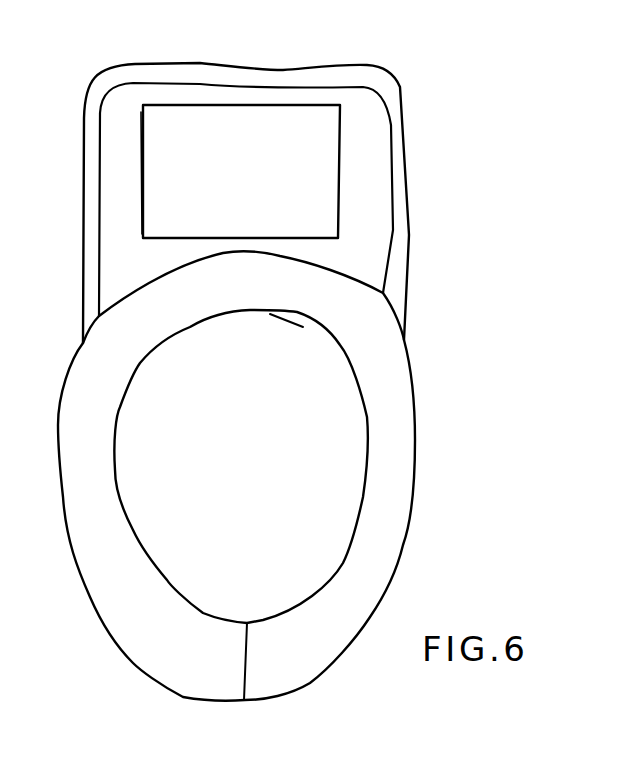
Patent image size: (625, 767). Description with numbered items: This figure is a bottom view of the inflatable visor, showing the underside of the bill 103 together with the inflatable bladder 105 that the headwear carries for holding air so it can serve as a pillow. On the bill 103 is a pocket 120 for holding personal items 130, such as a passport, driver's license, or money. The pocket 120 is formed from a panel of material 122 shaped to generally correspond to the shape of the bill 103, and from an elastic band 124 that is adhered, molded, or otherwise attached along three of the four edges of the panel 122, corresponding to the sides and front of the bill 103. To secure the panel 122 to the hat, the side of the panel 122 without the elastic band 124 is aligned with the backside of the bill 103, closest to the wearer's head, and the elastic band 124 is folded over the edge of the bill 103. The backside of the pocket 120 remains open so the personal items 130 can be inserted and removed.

The bill 103 is at (296, 373).
The inflatable bladder 105 is at (415, 468).
The pocket 120 is at (375, 180).
The panel of material 122 is at (141, 271).
The elastic band 124 is at (110, 100).
The personal items 130 is at (312, 208).